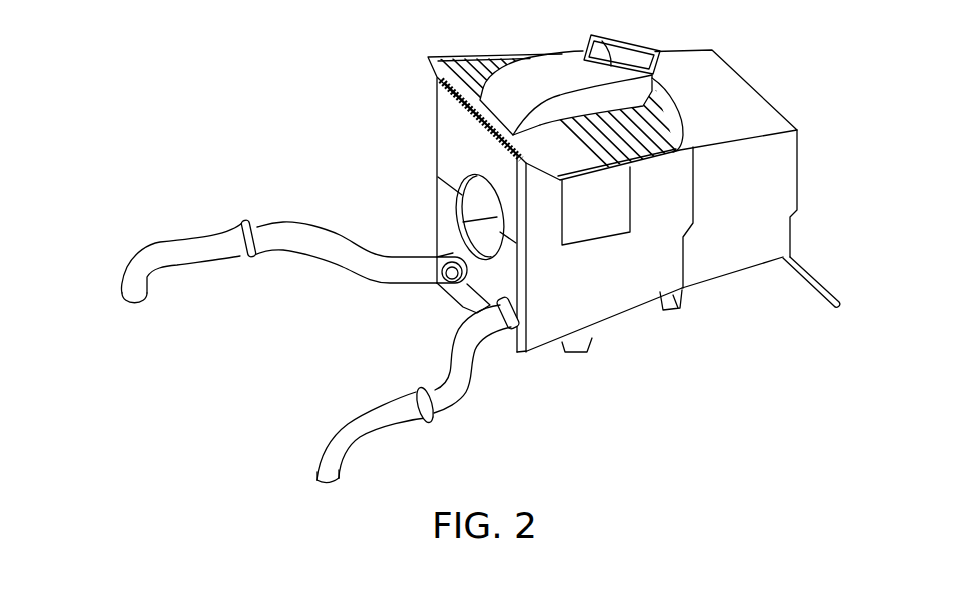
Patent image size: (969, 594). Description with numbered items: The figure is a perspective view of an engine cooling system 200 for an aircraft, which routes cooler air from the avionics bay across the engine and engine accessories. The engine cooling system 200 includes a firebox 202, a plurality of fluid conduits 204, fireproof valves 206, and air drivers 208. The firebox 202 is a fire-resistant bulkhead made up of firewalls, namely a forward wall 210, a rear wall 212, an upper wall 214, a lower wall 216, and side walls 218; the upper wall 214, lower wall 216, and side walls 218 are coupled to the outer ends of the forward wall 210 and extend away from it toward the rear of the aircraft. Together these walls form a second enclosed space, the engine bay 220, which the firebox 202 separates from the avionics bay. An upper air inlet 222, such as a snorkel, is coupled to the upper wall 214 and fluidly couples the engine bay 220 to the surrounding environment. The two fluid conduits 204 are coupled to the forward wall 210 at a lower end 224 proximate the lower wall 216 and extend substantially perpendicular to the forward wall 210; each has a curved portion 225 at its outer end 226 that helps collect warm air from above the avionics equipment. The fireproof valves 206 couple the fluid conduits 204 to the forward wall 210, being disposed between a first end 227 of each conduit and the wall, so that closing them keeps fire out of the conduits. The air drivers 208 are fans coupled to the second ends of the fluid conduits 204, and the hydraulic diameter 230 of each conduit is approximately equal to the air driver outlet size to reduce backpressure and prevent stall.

The engine cooling system 200 is at (226, 68).
The firebox 202 is at (770, 165).
The fluid conduit 204 is at (461, 370).
The fireproof valve 206 is at (522, 313).
The air driver 208 is at (325, 489).
The forward wall 210 is at (457, 133).
The rear wall 212 is at (760, 91).
The upper wall 214 is at (633, 131).
The lower wall 216 is at (543, 348).
The side wall 218 is at (634, 268).
The engine bay 220 is at (483, 231).
The upper air inlet 222 is at (552, 75).
The lower end 224 is at (519, 372).
The curved portion 225 is at (157, 253).
The outer end 226 is at (130, 323).
The first end 227 is at (430, 228).
The hydraulic diameter 230 is at (383, 482).